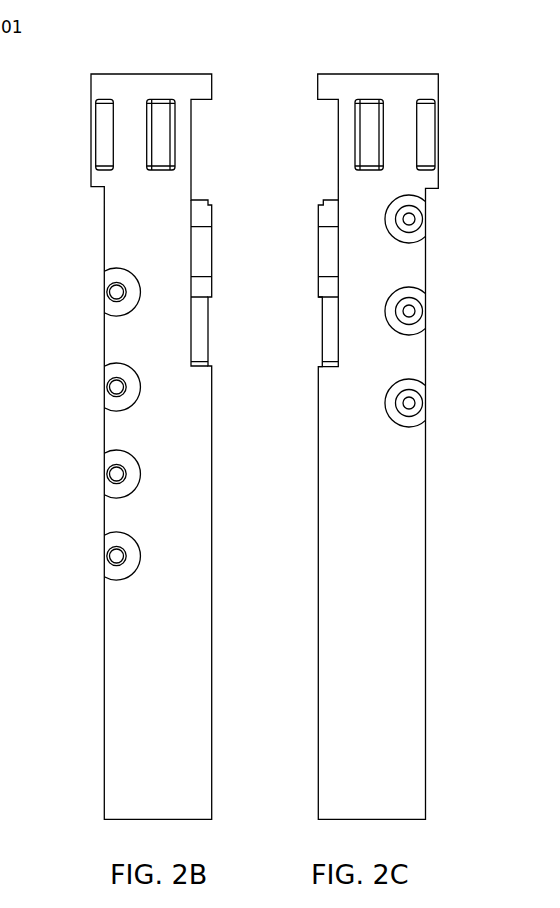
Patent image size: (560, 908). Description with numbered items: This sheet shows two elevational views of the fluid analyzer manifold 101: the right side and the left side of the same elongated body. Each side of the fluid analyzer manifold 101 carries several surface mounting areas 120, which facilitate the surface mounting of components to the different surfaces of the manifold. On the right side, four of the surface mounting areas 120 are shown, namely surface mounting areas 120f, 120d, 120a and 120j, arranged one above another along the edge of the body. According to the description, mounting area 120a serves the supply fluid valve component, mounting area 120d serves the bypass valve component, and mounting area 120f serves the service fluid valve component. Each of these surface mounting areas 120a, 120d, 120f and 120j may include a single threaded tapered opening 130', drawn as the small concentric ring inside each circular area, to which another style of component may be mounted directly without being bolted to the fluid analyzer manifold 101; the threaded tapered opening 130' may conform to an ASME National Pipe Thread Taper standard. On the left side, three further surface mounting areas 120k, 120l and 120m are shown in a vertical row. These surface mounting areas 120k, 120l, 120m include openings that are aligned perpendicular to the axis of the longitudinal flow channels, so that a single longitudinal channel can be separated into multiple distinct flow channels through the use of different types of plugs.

In FIG. 2B, the fluid analyzer manifold 101 is at (200, 43).
In FIG. 2C, the fluid analyzer manifold 101 is at (428, 43).
In FIG. 2B, the surface mounting areas 120 is at (141, 440).
In FIG. 2C, the surface mounting areas 120 is at (396, 313).
In FIG. 2B, the mounting area 120a is at (105, 487).
In FIG. 2B, the mounting area 120d is at (105, 398).
In FIG. 2B, the mounting area 120f is at (106, 311).
In FIG. 2B, the surface mounting area 120j is at (105, 568).
In FIG. 2C, the surface mounting area 120k is at (450, 405).
In FIG. 2C, the surface mounting area 120l is at (421, 325).
In FIG. 2C, the surface mounting area 120m is at (421, 232).
In FIG. 2B, the threaded tapered opening 130' is at (127, 423).